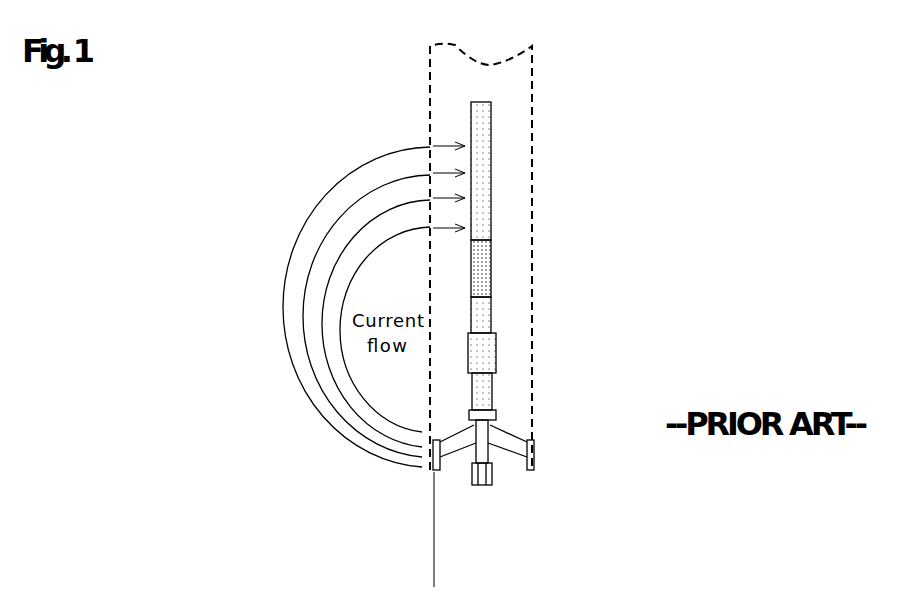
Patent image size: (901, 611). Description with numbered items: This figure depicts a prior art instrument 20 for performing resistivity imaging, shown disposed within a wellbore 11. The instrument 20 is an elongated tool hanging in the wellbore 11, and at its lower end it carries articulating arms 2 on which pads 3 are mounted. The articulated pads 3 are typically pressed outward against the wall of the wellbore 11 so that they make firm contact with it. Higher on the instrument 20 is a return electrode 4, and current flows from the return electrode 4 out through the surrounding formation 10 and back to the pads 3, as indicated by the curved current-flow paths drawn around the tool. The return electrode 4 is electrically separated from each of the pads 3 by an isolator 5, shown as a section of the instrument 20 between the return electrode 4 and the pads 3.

The wellbore 11 is at (518, 167).
The instrument 20 is at (485, 203).
The isolator 5 is at (486, 271).
The articulating arms 2 is at (505, 437).
The pads 3 is at (440, 470).
The return electrode 4 is at (367, 178).
The formation 10 is at (292, 307).